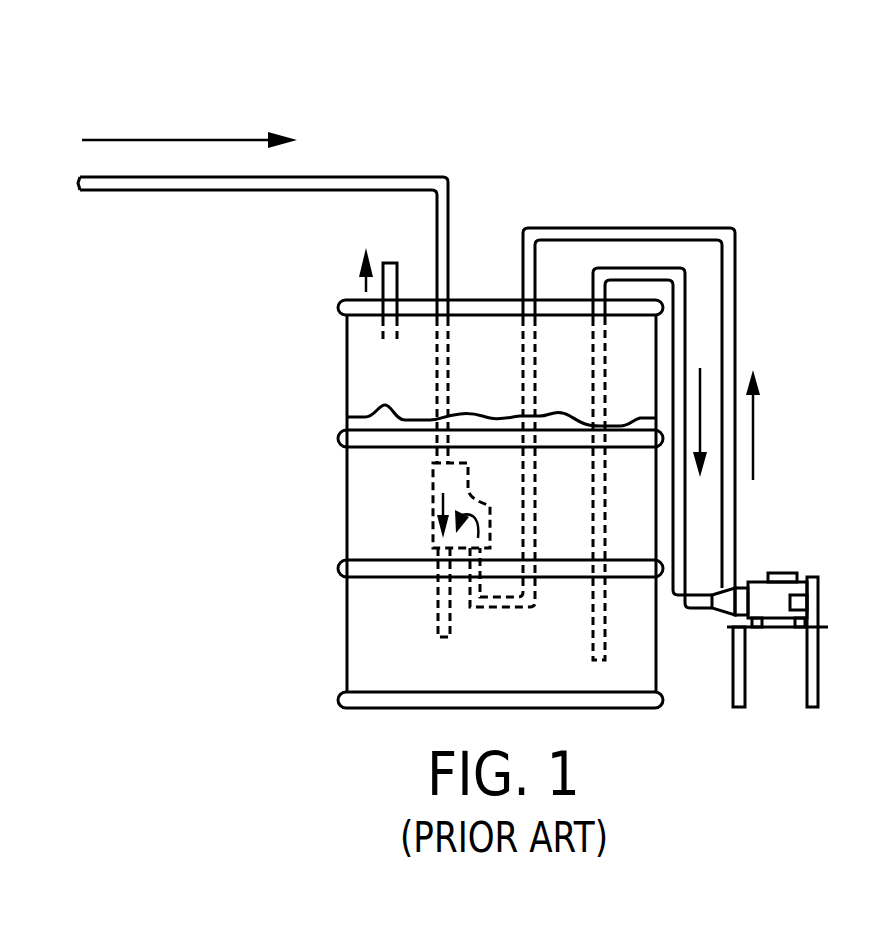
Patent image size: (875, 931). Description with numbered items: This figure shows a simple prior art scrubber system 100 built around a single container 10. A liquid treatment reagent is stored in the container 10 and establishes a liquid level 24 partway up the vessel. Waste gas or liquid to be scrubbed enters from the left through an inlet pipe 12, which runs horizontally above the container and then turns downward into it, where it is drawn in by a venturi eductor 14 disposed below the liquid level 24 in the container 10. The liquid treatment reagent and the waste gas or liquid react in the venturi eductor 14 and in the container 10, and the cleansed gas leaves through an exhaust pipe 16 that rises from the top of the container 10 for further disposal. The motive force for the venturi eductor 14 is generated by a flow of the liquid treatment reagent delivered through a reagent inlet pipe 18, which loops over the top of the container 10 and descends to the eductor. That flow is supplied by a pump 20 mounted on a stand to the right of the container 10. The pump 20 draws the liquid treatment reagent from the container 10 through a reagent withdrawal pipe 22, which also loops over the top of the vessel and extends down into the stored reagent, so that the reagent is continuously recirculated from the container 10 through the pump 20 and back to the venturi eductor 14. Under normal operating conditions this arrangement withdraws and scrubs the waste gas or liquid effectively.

The scrubber system 100 is at (633, 127).
The container 10 is at (347, 493).
The inlet pipe 12 is at (108, 192).
The venturi eductor 14 is at (433, 513).
The exhaust pipe 16 is at (390, 262).
The reagent inlet pipe 18 is at (620, 228).
The pump 20 is at (778, 573).
The reagent withdrawal pipe 22 is at (705, 610).
The liquid level 24 is at (349, 415).